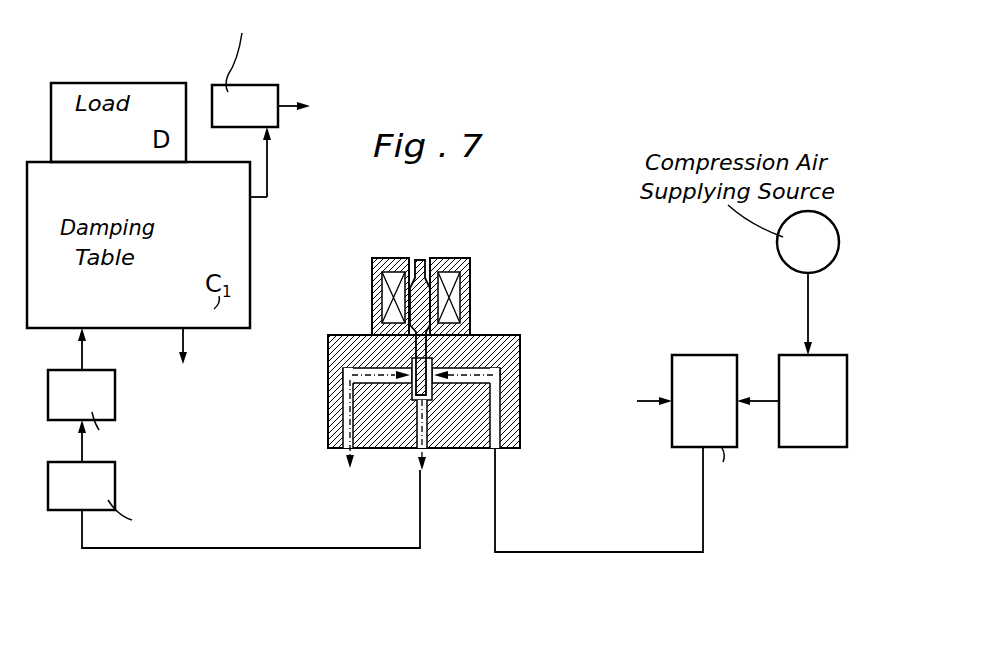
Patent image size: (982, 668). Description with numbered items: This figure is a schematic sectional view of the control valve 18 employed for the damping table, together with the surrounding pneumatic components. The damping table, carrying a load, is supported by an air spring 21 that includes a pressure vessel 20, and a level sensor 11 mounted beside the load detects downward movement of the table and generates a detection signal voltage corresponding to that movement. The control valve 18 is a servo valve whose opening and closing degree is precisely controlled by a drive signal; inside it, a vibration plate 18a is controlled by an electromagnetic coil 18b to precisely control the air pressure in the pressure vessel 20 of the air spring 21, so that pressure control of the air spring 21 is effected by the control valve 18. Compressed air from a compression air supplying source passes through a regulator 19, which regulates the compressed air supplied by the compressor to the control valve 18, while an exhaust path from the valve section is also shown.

The level sensor 11 is at (240, 92).
The control valve 18 is at (550, 385).
The vibration plate 18a is at (480, 342).
The electromagnetic coil 18b is at (457, 302).
The regulator 19 is at (830, 355).
The pressure vessel 20 is at (110, 485).
The air spring 21 is at (117, 409).